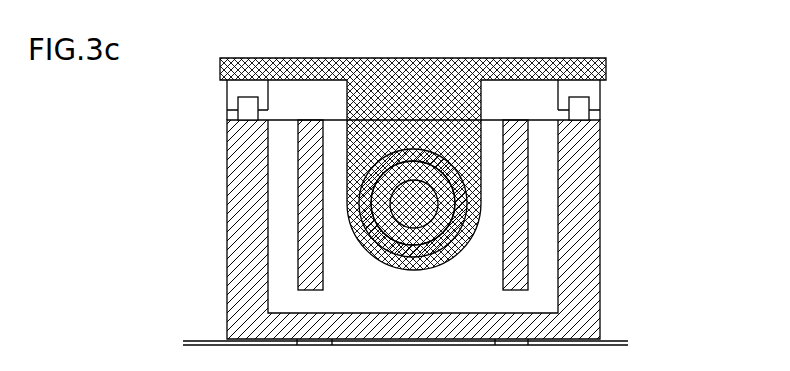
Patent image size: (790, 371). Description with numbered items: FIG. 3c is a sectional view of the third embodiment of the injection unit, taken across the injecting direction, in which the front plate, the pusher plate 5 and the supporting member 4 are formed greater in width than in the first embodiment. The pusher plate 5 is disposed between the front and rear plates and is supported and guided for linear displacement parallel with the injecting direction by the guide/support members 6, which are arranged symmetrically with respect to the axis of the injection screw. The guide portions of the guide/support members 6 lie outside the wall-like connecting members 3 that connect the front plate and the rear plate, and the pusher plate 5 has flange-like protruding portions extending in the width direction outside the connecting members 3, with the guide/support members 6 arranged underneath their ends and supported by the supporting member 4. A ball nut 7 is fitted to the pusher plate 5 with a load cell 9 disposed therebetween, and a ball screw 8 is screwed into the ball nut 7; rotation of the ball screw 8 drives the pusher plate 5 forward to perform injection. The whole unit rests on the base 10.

The wall-like connecting members 3 is at (298, 222).
The supporting member 4 is at (600, 313).
The pusher plate 5 is at (410, 58).
The guide/support members 6 is at (227, 111).
The ball nut 7 is at (448, 195).
The ball screw 8 is at (402, 193).
The load cell 9 is at (443, 150).
The base 10 is at (211, 345).